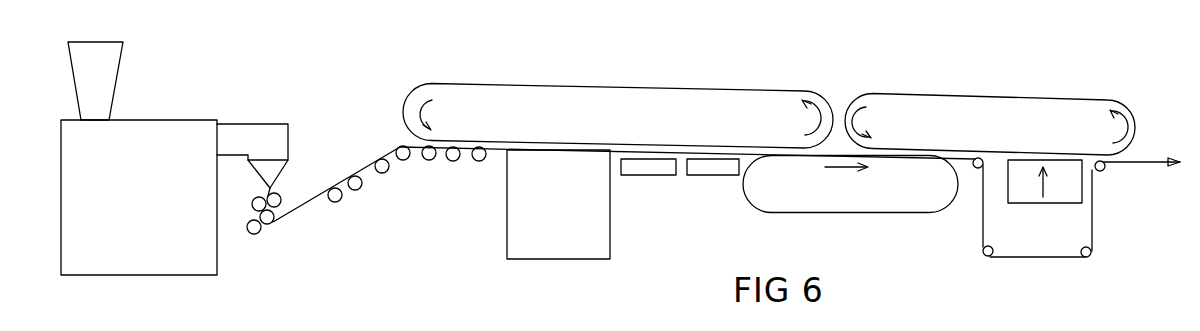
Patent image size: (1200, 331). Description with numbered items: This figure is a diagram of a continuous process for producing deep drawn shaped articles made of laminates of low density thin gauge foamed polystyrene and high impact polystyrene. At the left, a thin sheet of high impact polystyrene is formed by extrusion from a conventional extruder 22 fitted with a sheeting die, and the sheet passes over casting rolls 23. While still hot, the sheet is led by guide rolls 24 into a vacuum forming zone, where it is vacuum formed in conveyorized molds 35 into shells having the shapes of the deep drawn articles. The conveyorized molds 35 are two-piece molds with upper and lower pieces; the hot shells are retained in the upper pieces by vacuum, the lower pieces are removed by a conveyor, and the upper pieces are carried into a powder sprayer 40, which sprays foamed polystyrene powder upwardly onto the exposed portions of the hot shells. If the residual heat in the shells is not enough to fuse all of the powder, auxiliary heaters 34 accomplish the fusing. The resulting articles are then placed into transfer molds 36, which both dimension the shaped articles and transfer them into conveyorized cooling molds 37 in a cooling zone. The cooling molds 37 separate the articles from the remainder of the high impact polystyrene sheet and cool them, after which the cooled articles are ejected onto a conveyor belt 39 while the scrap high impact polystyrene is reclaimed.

The extruder 22 is at (171, 120).
The casting rolls 23 is at (278, 193).
The guide rolls 24 is at (425, 158).
The auxiliary heaters 34 is at (710, 177).
The conveyorized molds 35 is at (638, 88).
The transfer molds 36 is at (833, 212).
The conveyorized cooling molds 37 is at (1013, 97).
The conveyor belt 39 is at (1057, 203).
The powder sprayer 40 is at (506, 202).